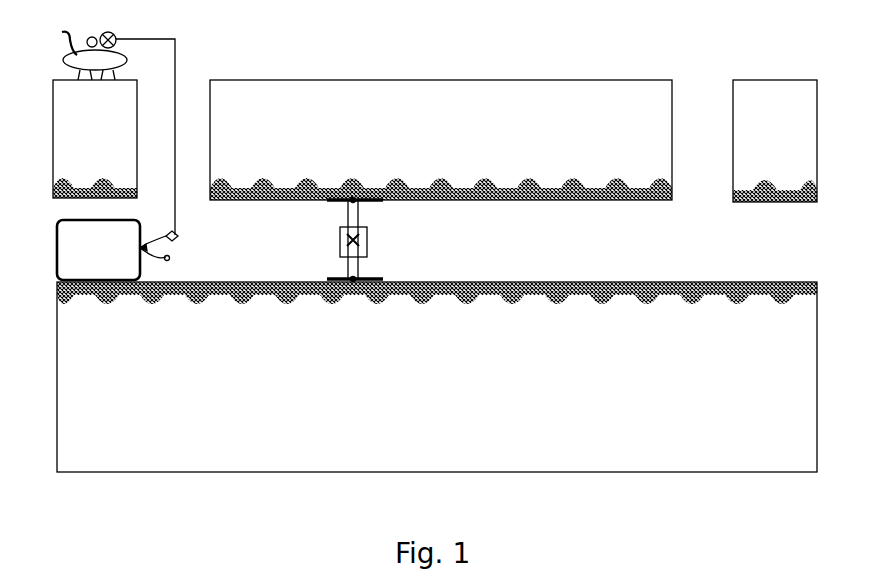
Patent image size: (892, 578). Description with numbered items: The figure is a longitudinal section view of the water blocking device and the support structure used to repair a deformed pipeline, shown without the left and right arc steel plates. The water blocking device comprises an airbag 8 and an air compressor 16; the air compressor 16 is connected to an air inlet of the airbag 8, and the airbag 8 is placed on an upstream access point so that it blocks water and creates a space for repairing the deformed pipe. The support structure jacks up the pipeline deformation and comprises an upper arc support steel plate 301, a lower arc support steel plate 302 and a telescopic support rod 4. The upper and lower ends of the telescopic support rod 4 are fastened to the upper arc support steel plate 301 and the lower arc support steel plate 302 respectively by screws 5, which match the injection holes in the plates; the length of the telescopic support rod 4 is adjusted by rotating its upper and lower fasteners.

The air compressor 16 is at (112, 33).
The airbag 8 is at (134, 215).
The screws 5 is at (360, 203).
The telescopic support rod 4 is at (368, 242).
The upper arc support steel plate 301 is at (340, 204).
The lower arc support steel plate 302 is at (327, 279).